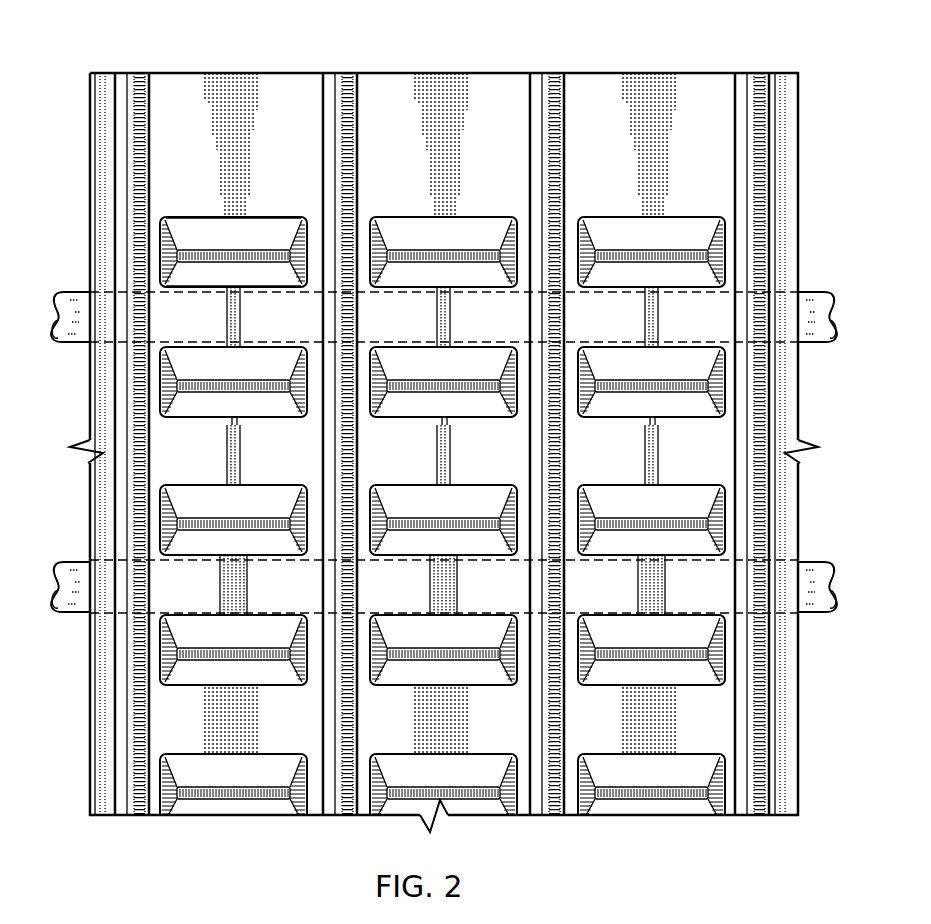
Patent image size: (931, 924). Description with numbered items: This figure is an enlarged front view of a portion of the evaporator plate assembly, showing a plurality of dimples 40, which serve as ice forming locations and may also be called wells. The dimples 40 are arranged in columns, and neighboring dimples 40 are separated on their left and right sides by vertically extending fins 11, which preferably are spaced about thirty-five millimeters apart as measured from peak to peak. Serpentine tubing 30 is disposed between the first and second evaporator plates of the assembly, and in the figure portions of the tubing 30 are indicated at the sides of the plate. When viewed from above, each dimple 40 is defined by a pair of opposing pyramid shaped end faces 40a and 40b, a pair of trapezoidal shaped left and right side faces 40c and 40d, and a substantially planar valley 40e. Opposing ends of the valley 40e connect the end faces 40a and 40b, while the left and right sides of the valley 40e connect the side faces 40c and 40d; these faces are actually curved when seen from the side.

The fin 11 is at (742, 72).
The serpentine tubing 30 is at (78, 615).
The dimple 40 is at (390, 448).
The end face 40a is at (162, 257).
The end face 40b is at (303, 256).
The side face 40c is at (255, 225).
The side face 40d is at (246, 283).
The valley 40e is at (200, 256).